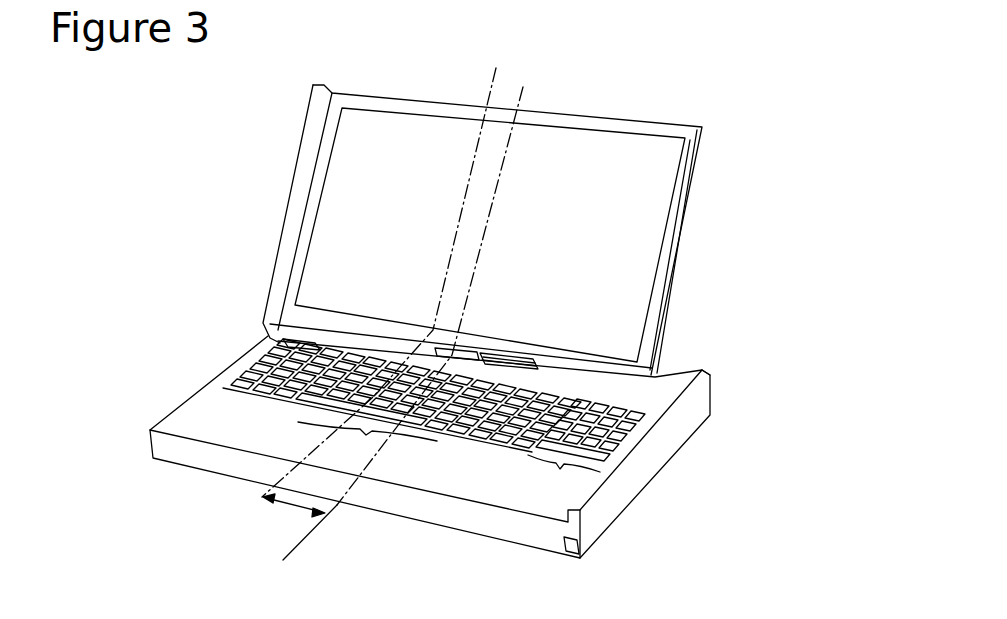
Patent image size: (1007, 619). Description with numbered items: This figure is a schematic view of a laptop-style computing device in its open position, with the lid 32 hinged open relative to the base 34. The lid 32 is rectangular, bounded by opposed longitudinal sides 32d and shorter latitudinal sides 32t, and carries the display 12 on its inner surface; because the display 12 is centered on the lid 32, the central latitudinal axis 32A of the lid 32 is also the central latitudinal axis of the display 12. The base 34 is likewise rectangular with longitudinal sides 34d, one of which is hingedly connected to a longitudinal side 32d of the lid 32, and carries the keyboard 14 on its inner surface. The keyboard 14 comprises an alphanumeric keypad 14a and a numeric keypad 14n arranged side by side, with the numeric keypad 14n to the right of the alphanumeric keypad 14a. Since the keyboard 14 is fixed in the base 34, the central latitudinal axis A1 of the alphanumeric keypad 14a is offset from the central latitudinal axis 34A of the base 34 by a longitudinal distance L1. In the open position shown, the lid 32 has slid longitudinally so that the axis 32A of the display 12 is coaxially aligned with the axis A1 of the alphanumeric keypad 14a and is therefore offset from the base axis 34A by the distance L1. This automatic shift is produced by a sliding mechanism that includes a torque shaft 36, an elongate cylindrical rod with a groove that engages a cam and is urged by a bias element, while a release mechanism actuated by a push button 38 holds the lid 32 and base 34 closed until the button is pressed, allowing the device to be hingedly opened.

The display 12 is at (653, 187).
The keyboard 14 is at (434, 464).
The alphanumeric keypad 14a is at (367, 438).
The numeric keypad 14n is at (586, 446).
The lid 32 is at (292, 187).
The central latitudinal axis of the lid 32A is at (364, 286).
The central latitudinal axis of the alphanumeric keypad A1 is at (350, 300).
The longitudinal sides of the lid 32d is at (652, 91).
The latitudinal sides of the lid 32t is at (673, 267).
The base 34 is at (166, 460).
The central latitudinal axis of the base 34A is at (424, 330).
The longitudinal sides of the base 34d is at (673, 374).
The torque shaft 36 is at (460, 353).
The push button 38 is at (573, 547).
The longitudinal distance L1 is at (304, 516).